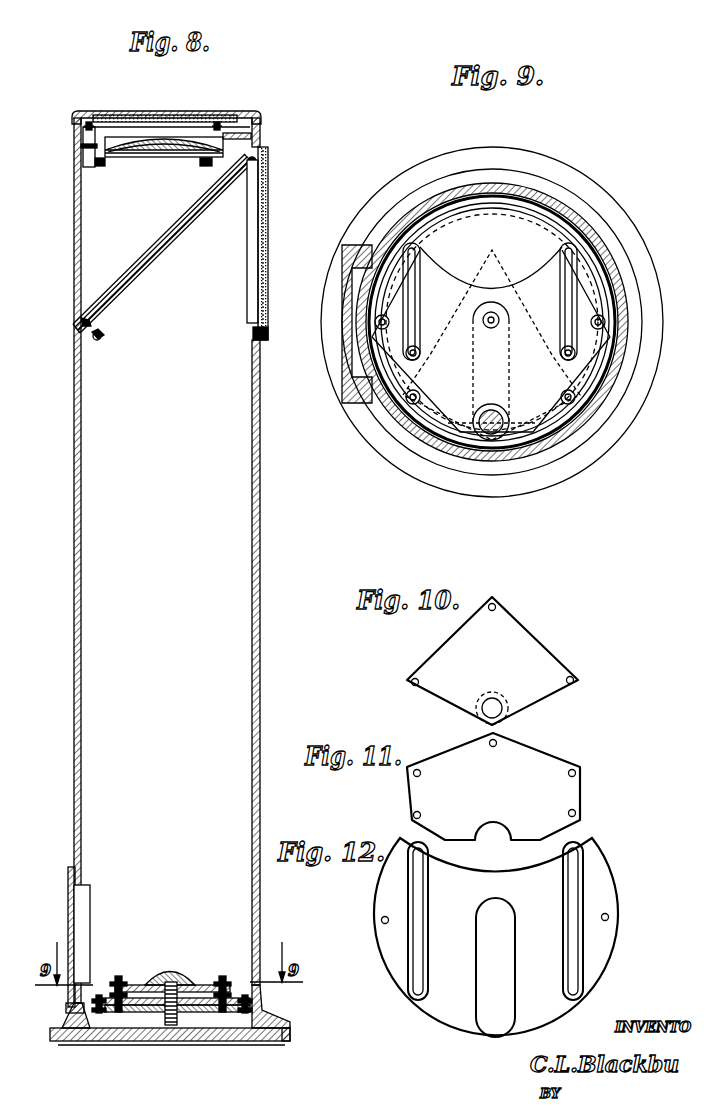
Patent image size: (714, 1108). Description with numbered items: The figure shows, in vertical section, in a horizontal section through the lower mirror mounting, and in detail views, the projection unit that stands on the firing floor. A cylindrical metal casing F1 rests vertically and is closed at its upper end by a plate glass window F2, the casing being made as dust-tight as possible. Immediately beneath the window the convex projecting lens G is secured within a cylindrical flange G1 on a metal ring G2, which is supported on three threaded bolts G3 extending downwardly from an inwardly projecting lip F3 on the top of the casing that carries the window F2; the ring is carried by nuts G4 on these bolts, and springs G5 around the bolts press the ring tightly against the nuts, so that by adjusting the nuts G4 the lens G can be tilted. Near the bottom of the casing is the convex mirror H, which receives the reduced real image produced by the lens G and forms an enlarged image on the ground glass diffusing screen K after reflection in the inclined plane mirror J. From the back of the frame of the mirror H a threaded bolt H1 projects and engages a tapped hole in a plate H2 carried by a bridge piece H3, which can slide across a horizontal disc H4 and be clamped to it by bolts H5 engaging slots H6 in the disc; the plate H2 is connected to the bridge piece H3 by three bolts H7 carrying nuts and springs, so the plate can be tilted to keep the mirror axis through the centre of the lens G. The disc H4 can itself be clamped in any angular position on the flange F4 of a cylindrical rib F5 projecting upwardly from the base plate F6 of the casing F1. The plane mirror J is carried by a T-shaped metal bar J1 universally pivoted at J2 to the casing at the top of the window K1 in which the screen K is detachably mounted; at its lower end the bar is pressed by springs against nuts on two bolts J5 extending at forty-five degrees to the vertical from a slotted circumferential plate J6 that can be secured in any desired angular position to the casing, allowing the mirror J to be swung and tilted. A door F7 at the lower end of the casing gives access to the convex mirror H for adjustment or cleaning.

In FIG. 8, the cylindrical metal casing F1 is at (74, 570).
In FIG. 9, the cylindrical metal casing F1 is at (548, 200).
In FIG. 8, the plate glass window F2 is at (152, 114).
In FIG. 8, the inwardly projecting lip F3 is at (96, 113).
In FIG. 8, the flange F4 is at (72, 1018).
In FIG. 9, the flange F4 is at (492, 200).
In FIG. 8, the cylindrical rib F5 is at (100, 1042).
In FIG. 9, the cylindrical rib F5 is at (458, 188).
In FIG. 8, the base plate F6 is at (288, 1038).
In FIG. 9, the base plate F6 is at (555, 470).
In FIG. 8, the door F7 is at (70, 905).
In FIG. 9, the door F7 is at (346, 270).
In FIG. 8, the convex projecting lens G is at (170, 140).
In FIG. 8, the cylindrical flange G1 is at (110, 154).
In FIG. 8, the metal ring G2 is at (246, 136).
In FIG. 8, the threaded bolts G3 is at (94, 166).
In FIG. 8, the nuts G4 is at (82, 160).
In FIG. 8, the springs G5 is at (78, 133).
In FIG. 8, the convex mirror H is at (174, 966).
In FIG. 8, the threaded bolt H1 is at (174, 1028).
In FIG. 9, the threaded bolt H1 is at (492, 440).
In FIG. 8, the plate H2 is at (132, 984).
In FIG. 9, the plate H2 is at (457, 393).
In FIG. 10, the plate H2 is at (506, 655).
In FIG. 8, the bridge piece H3 is at (142, 1006).
In FIG. 9, the bridge piece H3 is at (405, 400).
In FIG. 11, the bridge piece H3 is at (535, 790).
In FIG. 8, the horizontal disc H4 is at (210, 1010).
In FIG. 9, the horizontal disc H4 is at (485, 290).
In FIG. 12, the horizontal disc H4 is at (537, 965).
In FIG. 9, the bolts H5 is at (410, 352).
In FIG. 9, the slots H6 is at (410, 247).
In FIG. 12, the slots H6 is at (412, 905).
In FIG. 8, the bolts H7 is at (118, 975).
In FIG. 9, the bolts H7 is at (500, 317).
In FIG. 8, the inclined plane mirror J is at (160, 246).
In FIG. 8, the T-shaped metal bar J1 is at (125, 272).
In FIG. 8, the universal pivot J2 is at (262, 168).
In FIG. 8, the bolts J5 is at (99, 340).
In FIG. 8, the slotted circumferential plate J6 is at (80, 318).
In FIG. 8, the ground glass diffusing screen K is at (248, 293).
In FIG. 8, the window K1 is at (255, 243).